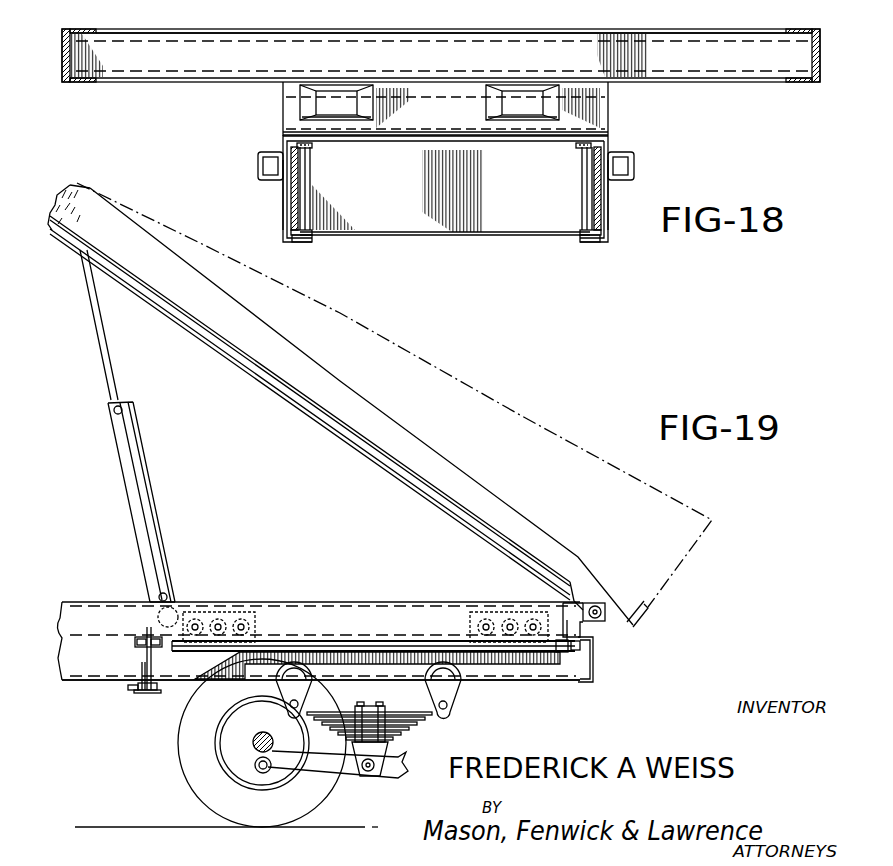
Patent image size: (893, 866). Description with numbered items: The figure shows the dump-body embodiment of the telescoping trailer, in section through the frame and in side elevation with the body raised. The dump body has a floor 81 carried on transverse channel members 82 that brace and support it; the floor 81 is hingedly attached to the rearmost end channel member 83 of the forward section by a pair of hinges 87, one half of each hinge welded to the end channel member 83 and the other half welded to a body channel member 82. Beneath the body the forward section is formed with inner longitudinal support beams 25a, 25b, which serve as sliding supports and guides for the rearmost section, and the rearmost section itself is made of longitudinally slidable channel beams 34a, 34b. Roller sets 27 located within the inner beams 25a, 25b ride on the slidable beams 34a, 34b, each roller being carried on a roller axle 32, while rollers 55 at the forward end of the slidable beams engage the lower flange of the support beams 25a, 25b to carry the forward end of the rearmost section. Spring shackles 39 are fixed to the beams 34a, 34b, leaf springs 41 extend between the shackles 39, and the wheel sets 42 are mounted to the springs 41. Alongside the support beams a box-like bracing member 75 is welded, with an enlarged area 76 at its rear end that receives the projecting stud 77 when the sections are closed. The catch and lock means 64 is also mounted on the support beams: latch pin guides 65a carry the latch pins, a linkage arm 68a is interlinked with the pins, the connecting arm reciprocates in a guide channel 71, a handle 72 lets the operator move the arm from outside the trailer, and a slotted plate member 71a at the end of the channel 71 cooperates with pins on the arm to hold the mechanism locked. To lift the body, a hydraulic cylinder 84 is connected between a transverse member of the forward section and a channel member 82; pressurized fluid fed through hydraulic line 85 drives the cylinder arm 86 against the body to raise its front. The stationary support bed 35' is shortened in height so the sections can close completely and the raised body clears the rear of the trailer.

In FIG. 18, the floor 81 is at (66, 42).
In FIG. 19, the floor 81 is at (390, 434).
In FIG. 18, the transverse channel member 82 is at (447, 61).
In FIG. 19, the transverse channel member 82 is at (647, 617).
In FIG. 18, the rearmost end channel member 83 is at (608, 109).
In FIG. 19, the rearmost end channel member 83 is at (566, 604).
In FIG. 18, the hinge 87 is at (340, 95).
In FIG. 19, the hinge 87 is at (600, 622).
In FIG. 18, the enlarged area 76 is at (257, 164).
In FIG. 19, the enlarged area 76 is at (560, 651).
In FIG. 18, the roller axle 32 is at (308, 145).
In FIG. 18, the longitudinally slidable channel beam 34a is at (301, 184).
In FIG. 19, the longitudinally slidable channel beam 34a is at (511, 672).
In FIG. 18, the longitudinally slidable channel beam 34b is at (594, 191).
In FIG. 18, the inner longitudinal support beam 25a is at (286, 192).
In FIG. 19, the inner longitudinal support beam 25a is at (100, 660).
In FIG. 18, the inner longitudinal support beam 25b is at (606, 203).
In FIG. 18, the roller 55 is at (315, 238).
In FIG. 19, the cylinder arm 86 is at (113, 360).
In FIG. 19, the hydraulic line 85 is at (128, 437).
In FIG. 19, the hydraulic cylinder 84 is at (147, 477).
In FIG. 19, the roller set 27 is at (208, 612).
In FIG. 19, the stationary support bed 35' is at (609, 659).
In FIG. 19, the projecting stud 77 is at (575, 651).
In FIG. 19, the spring shackle 39 is at (295, 672).
In FIG. 19, the box-like bracing member 75 is at (378, 642).
In FIG. 19, the leaf spring 41 is at (340, 720).
In FIG. 19, the linkage arm 68a is at (157, 660).
In FIG. 19, the latch pin guide 65a is at (145, 648).
In FIG. 19, the handle 72 is at (138, 680).
In FIG. 19, the guide channel 71 is at (160, 689).
In FIG. 19, the slotted plate member 71a is at (140, 697).
In FIG. 19, the catch and lock means 64 is at (138, 698).
In FIG. 19, the wheel set 42 is at (202, 779).